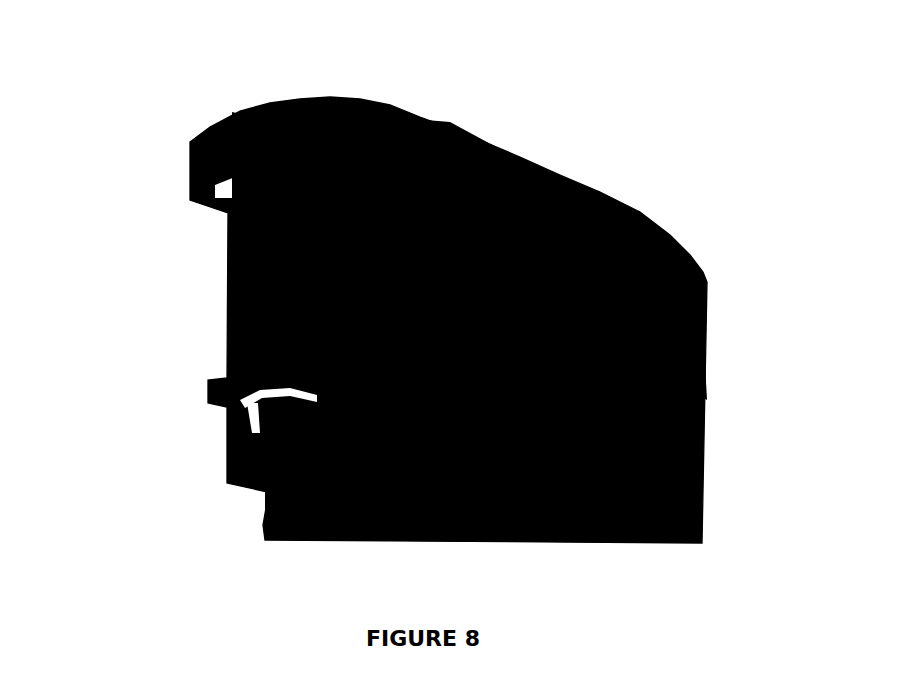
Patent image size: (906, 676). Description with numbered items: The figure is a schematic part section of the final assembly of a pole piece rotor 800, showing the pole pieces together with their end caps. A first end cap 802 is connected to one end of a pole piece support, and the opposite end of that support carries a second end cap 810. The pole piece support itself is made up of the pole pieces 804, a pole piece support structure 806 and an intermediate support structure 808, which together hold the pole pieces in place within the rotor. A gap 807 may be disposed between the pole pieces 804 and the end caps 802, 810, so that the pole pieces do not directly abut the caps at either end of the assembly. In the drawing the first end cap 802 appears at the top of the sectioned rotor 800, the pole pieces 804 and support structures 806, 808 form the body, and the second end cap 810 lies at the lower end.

The pole piece rotor 800 is at (691, 182).
The first end cap 802 is at (188, 140).
The pole pieces 804 is at (244, 133).
The pole piece support structure 806 is at (372, 103).
The gap 807 is at (293, 112).
The intermediate support structure 808 is at (442, 123).
The second end cap 810 is at (667, 545).